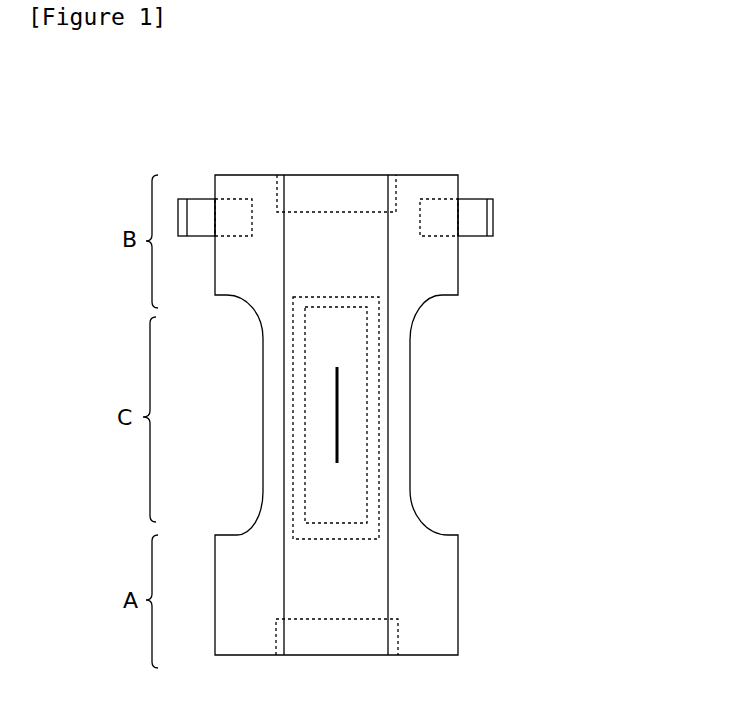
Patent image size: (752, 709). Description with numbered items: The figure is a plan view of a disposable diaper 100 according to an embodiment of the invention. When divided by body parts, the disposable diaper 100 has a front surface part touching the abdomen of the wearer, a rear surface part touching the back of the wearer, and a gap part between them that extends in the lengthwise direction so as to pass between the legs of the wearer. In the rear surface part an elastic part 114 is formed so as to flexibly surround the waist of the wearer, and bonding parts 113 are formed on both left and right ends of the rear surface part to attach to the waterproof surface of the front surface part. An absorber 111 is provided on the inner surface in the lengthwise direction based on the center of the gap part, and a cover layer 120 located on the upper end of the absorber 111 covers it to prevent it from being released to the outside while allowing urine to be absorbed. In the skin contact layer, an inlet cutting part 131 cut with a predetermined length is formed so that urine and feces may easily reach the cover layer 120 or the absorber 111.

The disposable diaper 100 is at (108, 117).
The elastic part 114 is at (333, 188).
The bonding parts 113 is at (472, 218).
The cover layer 120 is at (372, 347).
The absorber 111 is at (353, 418).
The inlet cutting part 131 is at (340, 445).